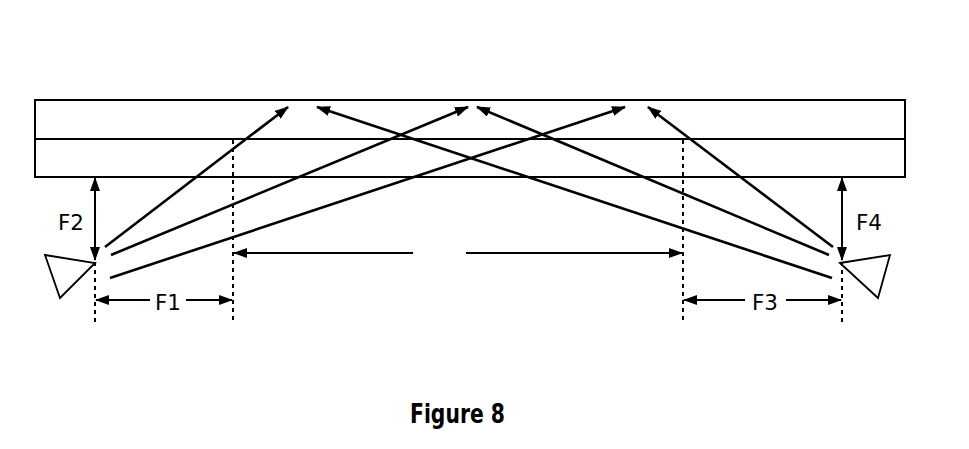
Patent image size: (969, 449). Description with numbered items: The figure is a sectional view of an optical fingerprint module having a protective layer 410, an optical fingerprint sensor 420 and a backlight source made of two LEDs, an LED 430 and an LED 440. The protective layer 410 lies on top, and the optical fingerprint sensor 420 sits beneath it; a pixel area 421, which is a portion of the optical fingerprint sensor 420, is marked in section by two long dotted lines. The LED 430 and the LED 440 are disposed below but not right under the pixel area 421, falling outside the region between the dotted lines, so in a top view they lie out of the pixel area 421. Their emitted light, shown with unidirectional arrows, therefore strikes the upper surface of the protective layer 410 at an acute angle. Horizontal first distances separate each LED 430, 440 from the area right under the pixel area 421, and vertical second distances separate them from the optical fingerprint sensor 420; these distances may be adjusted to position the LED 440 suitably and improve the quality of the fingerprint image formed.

The protective layer 410 is at (802, 128).
The optical fingerprint sensor 420 is at (735, 157).
The pixel area 421 is at (458, 231).
The LED 430 is at (63, 277).
The LED 440 is at (873, 277).